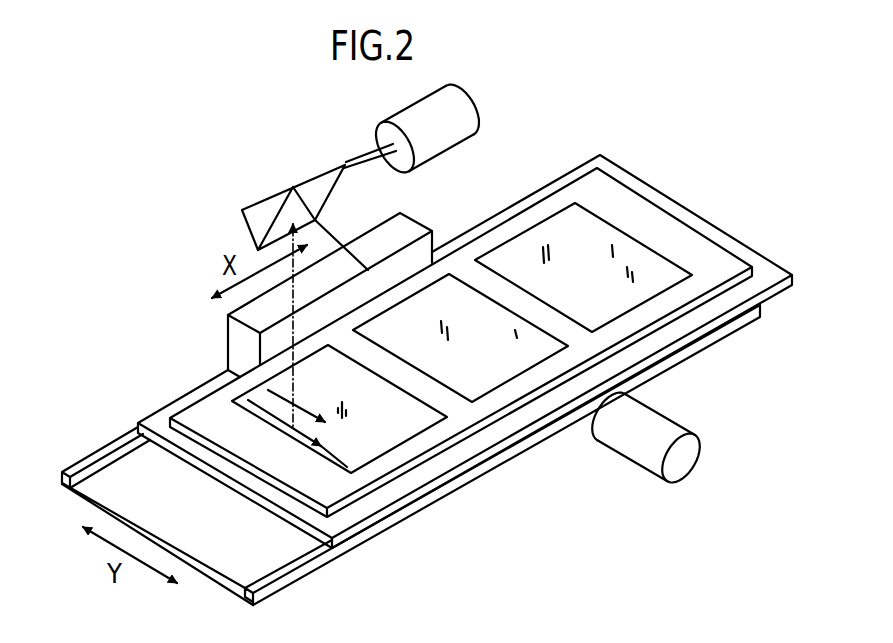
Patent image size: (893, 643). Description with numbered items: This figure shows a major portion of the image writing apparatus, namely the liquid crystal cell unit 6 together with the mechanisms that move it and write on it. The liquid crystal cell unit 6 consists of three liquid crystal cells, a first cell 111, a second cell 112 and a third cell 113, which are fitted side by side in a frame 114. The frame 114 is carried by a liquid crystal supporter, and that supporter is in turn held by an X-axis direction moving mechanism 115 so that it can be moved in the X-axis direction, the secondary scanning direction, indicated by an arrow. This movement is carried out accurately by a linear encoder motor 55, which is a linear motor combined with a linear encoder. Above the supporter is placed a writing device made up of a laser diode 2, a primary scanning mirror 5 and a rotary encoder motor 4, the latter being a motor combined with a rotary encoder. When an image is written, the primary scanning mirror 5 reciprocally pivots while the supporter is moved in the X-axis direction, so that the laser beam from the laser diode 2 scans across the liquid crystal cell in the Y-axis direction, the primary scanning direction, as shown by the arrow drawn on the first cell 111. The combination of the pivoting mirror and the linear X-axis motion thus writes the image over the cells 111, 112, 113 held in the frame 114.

The laser diode 2 is at (660, 422).
The rotary encoder motor 4 is at (447, 103).
The primary scanning mirror 5 is at (291, 184).
The liquid crystal cell unit 6 is at (630, 141).
The linear encoder motor 55 is at (227, 317).
The first cell 111 is at (395, 440).
The second cell 112 is at (447, 273).
The third cell 113 is at (555, 225).
The frame 114 is at (673, 217).
The X-axis direction moving mechanism 115 is at (132, 472).